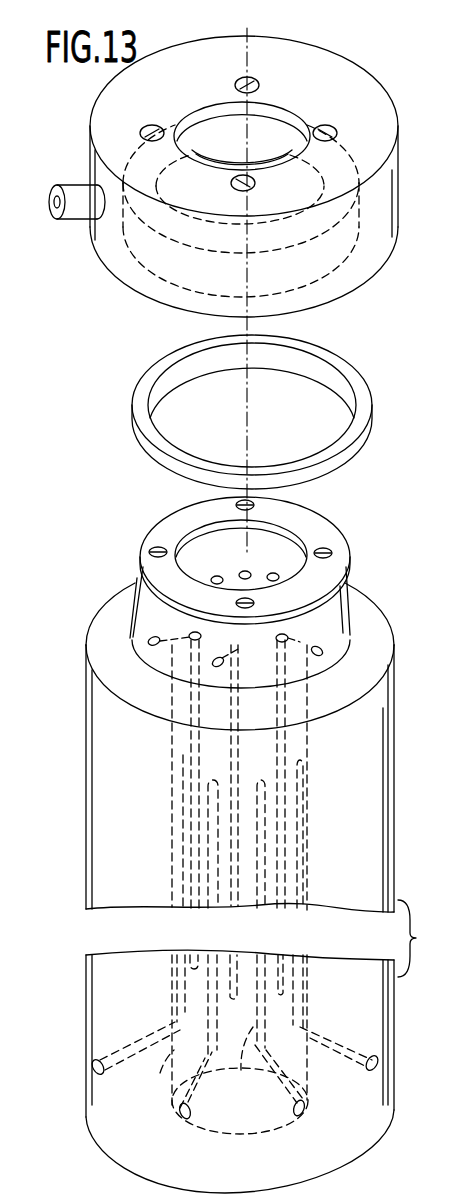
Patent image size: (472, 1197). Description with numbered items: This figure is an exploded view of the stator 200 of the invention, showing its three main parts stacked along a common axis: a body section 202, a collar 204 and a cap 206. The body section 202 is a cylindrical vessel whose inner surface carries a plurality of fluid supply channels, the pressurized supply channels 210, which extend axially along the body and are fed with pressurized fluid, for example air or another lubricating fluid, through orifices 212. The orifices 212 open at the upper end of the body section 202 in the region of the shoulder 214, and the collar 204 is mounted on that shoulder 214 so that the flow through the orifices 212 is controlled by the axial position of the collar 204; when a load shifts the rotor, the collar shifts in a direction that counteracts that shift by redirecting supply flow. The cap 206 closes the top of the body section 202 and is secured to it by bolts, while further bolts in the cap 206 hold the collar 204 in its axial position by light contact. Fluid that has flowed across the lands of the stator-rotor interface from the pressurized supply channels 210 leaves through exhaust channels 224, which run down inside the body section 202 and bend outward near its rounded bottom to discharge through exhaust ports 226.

The stator 200 is at (106, 322).
The body section 202 is at (92, 722).
The collar 204 is at (177, 466).
The cap 206 is at (337, 292).
The pressurized supply channels 210 is at (181, 727).
The orifices 212 is at (402, 605).
The shoulder 214 is at (337, 545).
The exhaust channels 224 is at (172, 1000).
The exhaust ports 226 is at (186, 1117).